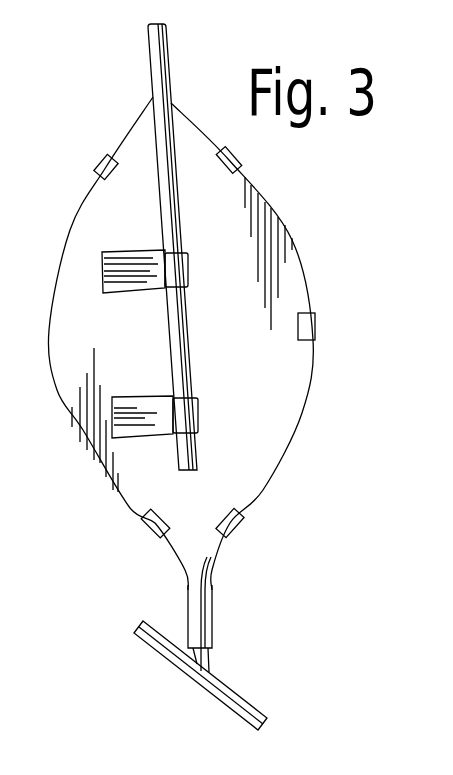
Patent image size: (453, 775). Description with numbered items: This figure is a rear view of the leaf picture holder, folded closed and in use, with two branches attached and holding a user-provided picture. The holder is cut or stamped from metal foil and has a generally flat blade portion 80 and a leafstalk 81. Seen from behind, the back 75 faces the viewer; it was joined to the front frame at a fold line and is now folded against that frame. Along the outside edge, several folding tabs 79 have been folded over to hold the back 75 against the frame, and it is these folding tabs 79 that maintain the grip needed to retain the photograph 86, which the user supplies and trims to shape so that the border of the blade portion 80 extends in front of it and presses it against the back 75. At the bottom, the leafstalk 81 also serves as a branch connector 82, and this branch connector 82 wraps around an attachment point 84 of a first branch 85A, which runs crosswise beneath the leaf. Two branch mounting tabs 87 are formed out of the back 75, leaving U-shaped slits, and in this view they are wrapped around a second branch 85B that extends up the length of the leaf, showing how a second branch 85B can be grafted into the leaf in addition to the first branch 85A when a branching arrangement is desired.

The back 75 is at (263, 456).
The folding tabs 79 is at (100, 165).
The blade portion 80 is at (277, 530).
The leafstalk 81 is at (267, 593).
The branch connector 82 is at (213, 636).
The attachment point 84 is at (208, 655).
The first branch 85A is at (253, 698).
The second branch 85B is at (145, 77).
The photograph 86 is at (153, 405).
The branch mounting tabs 87 is at (192, 267).